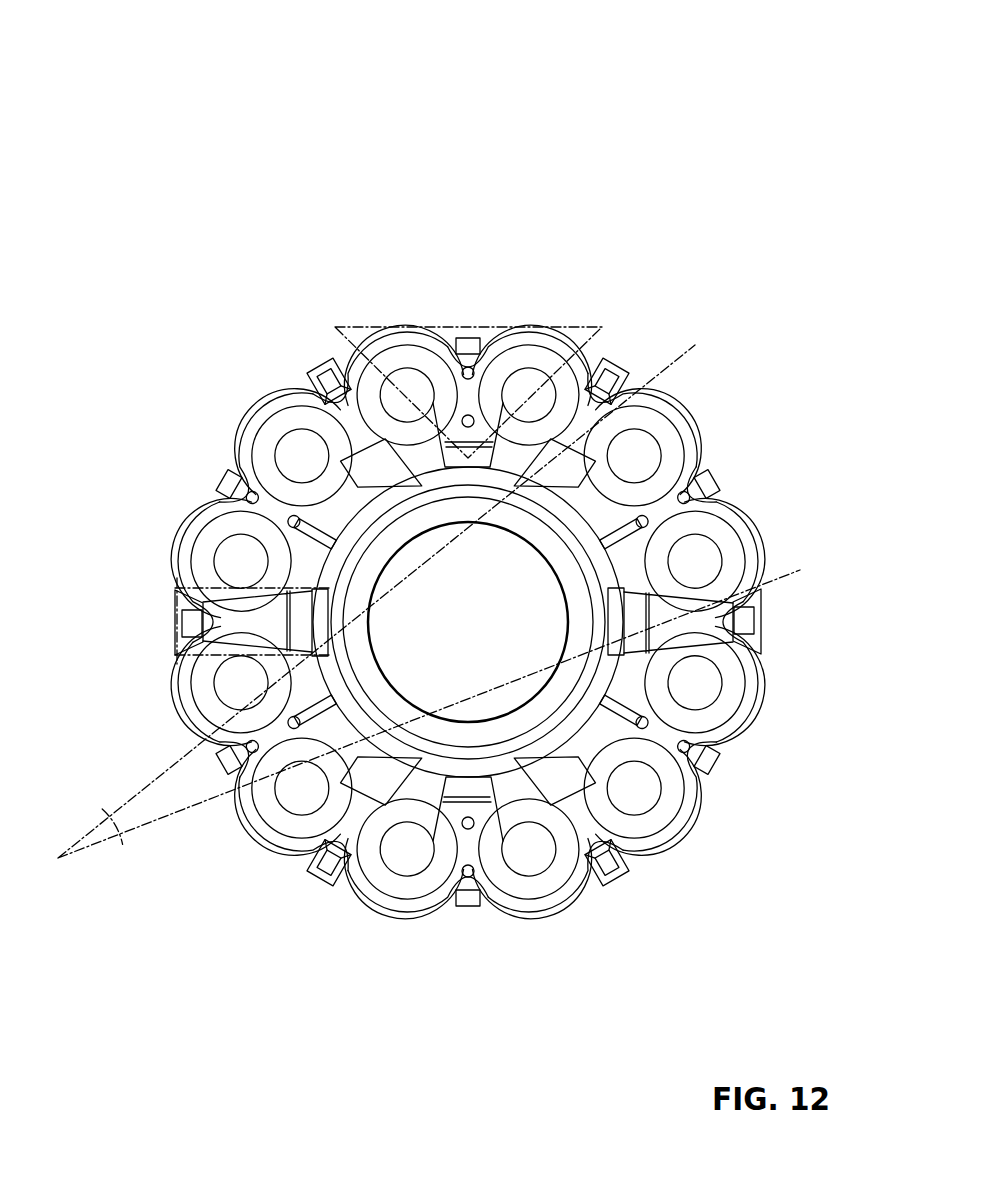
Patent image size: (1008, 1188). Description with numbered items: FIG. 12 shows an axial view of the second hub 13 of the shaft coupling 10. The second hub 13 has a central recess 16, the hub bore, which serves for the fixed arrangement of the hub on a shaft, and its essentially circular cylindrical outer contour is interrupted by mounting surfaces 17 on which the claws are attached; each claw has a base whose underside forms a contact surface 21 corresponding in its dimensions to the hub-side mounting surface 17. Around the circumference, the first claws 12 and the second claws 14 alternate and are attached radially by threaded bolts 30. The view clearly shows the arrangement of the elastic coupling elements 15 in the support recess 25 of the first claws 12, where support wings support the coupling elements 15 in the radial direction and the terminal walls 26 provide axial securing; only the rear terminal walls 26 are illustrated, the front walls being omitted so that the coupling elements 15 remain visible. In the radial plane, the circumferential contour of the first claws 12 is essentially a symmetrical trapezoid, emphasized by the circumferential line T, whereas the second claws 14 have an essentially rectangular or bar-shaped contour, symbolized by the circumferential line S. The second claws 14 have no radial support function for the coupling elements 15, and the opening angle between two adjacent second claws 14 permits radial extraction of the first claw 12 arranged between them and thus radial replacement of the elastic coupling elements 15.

The shaft coupling 10 is at (745, 92).
The first claw 12 is at (494, 622).
The second hub 13 is at (468, 723).
The second claw 14 is at (503, 625).
The elastic coupling element 15 is at (468, 622).
The central recess 16 is at (468, 622).
The mounting surface 17 is at (468, 622).
The contact surface 21 is at (468, 622).
The support recess 25 is at (568, 532).
The terminal wall 26 is at (468, 677).
The threaded bolt 30 is at (506, 622).
The circumferential line T is at (470, 327).
The circumferential line S is at (175, 626).